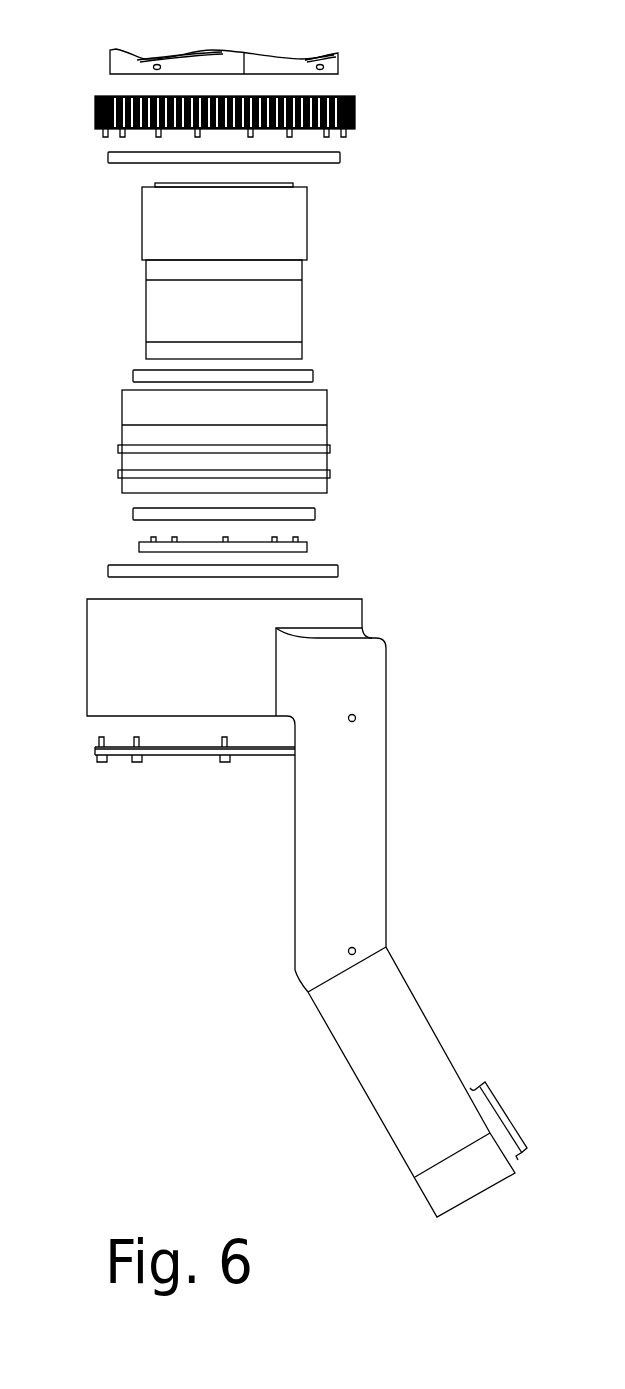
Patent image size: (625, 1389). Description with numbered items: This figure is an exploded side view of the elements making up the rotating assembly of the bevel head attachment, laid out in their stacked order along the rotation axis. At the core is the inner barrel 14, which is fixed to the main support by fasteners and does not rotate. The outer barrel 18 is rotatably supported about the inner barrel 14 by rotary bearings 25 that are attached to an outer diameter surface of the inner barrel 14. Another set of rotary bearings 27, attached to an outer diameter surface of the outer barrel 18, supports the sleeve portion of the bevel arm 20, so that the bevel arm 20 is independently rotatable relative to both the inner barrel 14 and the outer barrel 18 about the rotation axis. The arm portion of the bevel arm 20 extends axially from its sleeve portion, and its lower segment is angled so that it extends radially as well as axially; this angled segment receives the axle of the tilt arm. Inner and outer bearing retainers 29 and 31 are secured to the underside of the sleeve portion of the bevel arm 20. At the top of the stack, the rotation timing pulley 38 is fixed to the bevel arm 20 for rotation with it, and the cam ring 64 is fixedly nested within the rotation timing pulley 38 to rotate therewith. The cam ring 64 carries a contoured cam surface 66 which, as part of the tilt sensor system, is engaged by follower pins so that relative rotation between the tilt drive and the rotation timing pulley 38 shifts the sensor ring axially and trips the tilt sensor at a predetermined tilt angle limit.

The cam ring 64 is at (112, 65).
The cam surface 66 is at (333, 55).
The rotation timing pulley 38 is at (95, 115).
The rotary bearings 27 is at (337, 157).
The inner barrel 14 is at (303, 226).
The rotary bearings 25 is at (313, 375).
The outer barrel 18 is at (320, 431).
The inner bearing retainer 29 is at (139, 547).
The bevel arm 20 is at (386, 823).
The outer bearing retainer 31 is at (95, 752).